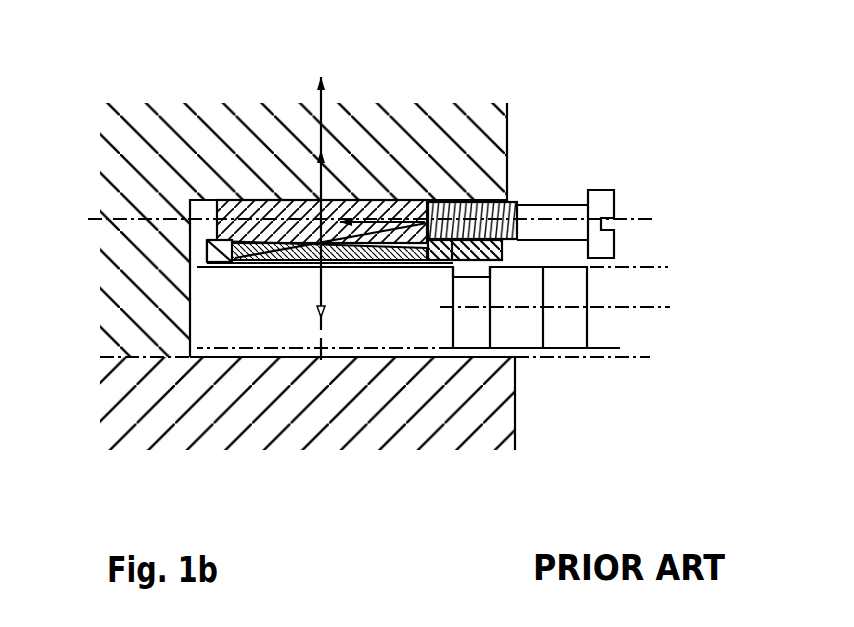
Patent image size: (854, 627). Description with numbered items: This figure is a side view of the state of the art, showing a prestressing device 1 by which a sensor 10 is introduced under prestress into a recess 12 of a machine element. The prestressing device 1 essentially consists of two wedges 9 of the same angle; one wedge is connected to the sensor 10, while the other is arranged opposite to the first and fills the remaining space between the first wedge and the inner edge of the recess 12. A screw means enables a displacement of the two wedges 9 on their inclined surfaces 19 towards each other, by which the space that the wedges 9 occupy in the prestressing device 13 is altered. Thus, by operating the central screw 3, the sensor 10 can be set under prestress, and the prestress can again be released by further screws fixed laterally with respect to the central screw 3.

The prestressing device 1 is at (800, 495).
The central screw 3 is at (604, 205).
The wedges 9 is at (244, 217).
The sensor 10 is at (262, 212).
The recess 12 is at (88, 200).
The prestressing device 13 is at (368, 197).
The inclined surfaces 19 is at (480, 200).